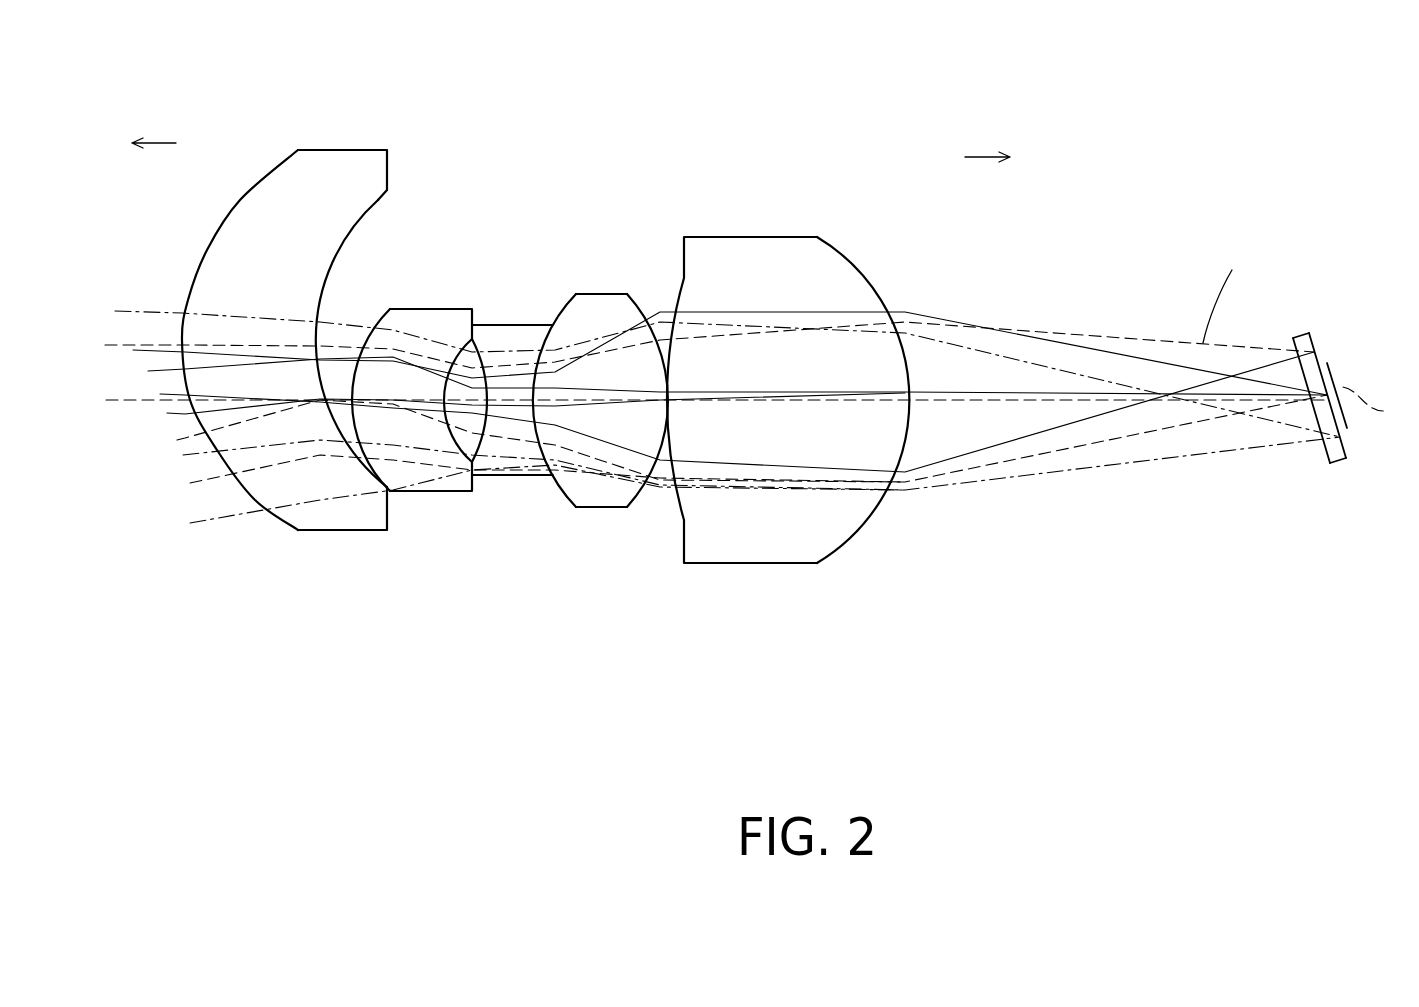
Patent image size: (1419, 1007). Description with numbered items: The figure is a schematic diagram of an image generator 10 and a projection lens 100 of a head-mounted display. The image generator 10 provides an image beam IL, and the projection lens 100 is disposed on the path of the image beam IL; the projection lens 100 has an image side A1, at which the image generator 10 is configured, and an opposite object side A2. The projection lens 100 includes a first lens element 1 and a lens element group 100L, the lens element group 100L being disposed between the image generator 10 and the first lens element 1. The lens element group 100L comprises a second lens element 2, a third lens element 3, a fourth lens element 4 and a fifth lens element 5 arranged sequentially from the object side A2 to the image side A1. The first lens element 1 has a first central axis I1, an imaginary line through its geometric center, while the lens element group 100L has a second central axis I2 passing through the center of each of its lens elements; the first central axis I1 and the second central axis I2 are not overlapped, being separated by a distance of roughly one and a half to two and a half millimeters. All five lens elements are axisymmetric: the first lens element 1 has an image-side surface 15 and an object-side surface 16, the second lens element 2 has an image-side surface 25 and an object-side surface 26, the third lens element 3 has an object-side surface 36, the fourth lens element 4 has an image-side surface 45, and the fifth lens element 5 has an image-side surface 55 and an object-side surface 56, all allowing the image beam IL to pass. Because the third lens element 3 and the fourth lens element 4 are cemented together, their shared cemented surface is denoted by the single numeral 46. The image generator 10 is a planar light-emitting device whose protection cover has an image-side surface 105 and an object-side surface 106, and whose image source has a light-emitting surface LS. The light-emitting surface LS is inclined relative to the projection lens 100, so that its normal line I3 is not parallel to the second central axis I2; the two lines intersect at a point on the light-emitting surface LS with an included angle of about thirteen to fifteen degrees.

The projection lens 100 is at (920, 41).
The lens element group 100L is at (920, 104).
The first lens element 1 is at (344, 152).
The second lens element 2 is at (420, 311).
The third lens element 3 is at (497, 326).
The fourth lens element 4 is at (594, 296).
The fifth lens element 5 is at (756, 239).
The image-side surface of first lens element 15 is at (350, 462).
The object-side surface of first lens element 16 is at (252, 498).
The image-side surface of second lens element 25 is at (462, 462).
The object-side surface of second lens element 26 is at (390, 470).
The object-side surface of third lens element 36 is at (487, 433).
The image-side surface of fourth lens element 45 is at (641, 490).
The cemented surface of third and fourth lens elements 46 is at (538, 438).
The image-side surface of fifth lens element 55 is at (877, 515).
The object-side surface of fifth lens element 56 is at (678, 505).
The image generator 10 is at (1318, 317).
The image-side surface of protection cover 105 is at (1345, 442).
The object-side surface of protection cover 106 is at (1327, 448).
The light-emitting surface LS is at (1337, 378).
The image beam IL is at (1224, 291).
The first central axis I1 is at (105, 343).
The second central axis I2 is at (106, 402).
The normal line of light-emitting surface I3 is at (1376, 407).
The image side A1 is at (995, 136).
The object side A2 is at (148, 123).